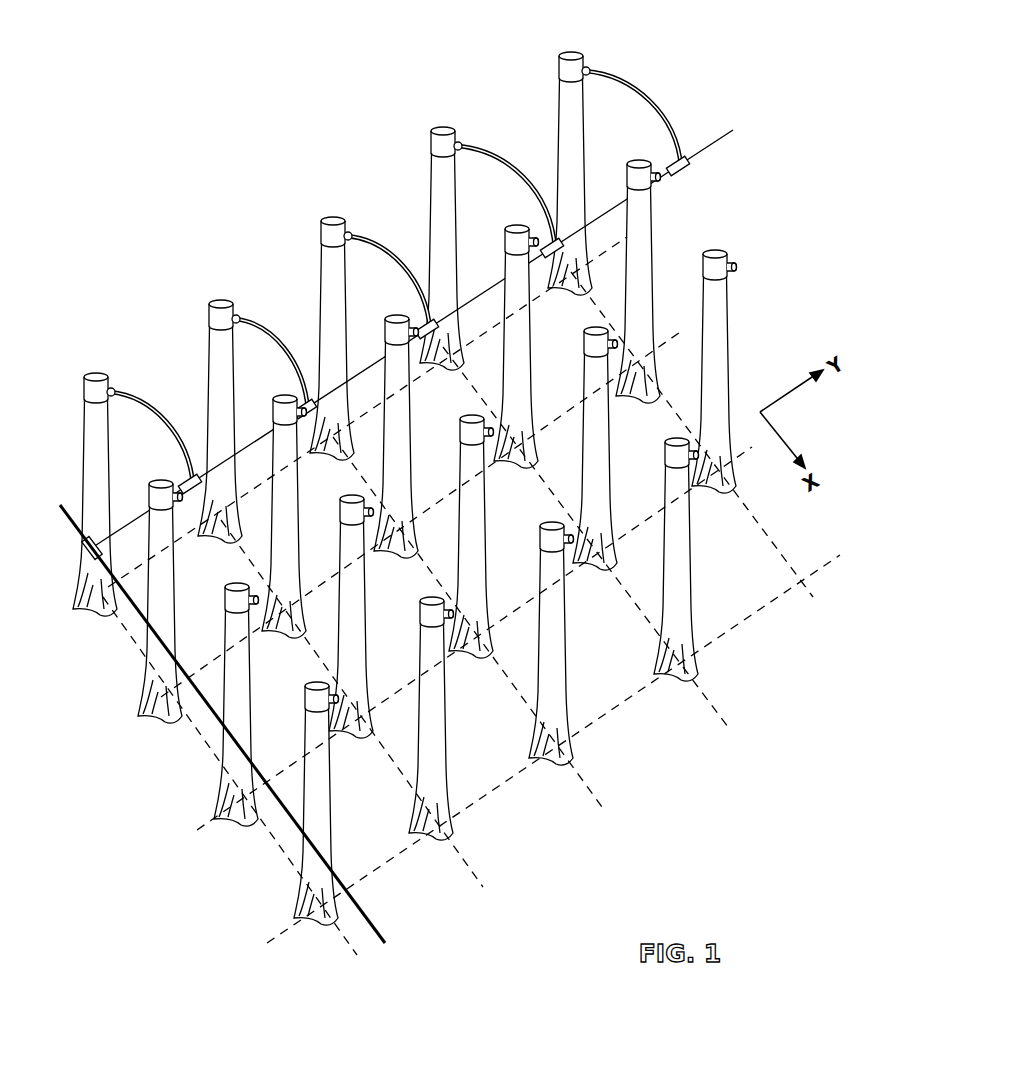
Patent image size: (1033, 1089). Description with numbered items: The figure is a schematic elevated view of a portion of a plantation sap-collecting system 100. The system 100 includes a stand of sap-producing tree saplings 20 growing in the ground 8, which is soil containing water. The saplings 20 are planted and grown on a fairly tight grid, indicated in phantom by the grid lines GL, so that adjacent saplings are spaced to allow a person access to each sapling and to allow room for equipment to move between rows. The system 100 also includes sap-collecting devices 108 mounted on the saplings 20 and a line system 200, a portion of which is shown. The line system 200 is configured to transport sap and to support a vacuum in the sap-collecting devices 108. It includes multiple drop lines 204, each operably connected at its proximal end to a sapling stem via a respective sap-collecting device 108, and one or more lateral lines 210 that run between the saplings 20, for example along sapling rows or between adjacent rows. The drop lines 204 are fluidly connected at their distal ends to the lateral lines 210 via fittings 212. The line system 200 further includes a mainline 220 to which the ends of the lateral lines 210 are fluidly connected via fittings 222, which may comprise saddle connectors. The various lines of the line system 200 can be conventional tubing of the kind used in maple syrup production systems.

The plantation sap-collecting system 100 is at (240, 100).
The sapling 20 is at (87, 472).
The sap-collecting device 108 is at (84, 381).
The line system 200 is at (691, 103).
The drop line 204 is at (143, 395).
The lateral line 210 is at (712, 146).
The fitting 212 is at (690, 172).
The mainline 220 is at (372, 917).
The fitting 222 is at (92, 560).
The grid lines GL is at (594, 805).
The ground 8 is at (758, 782).